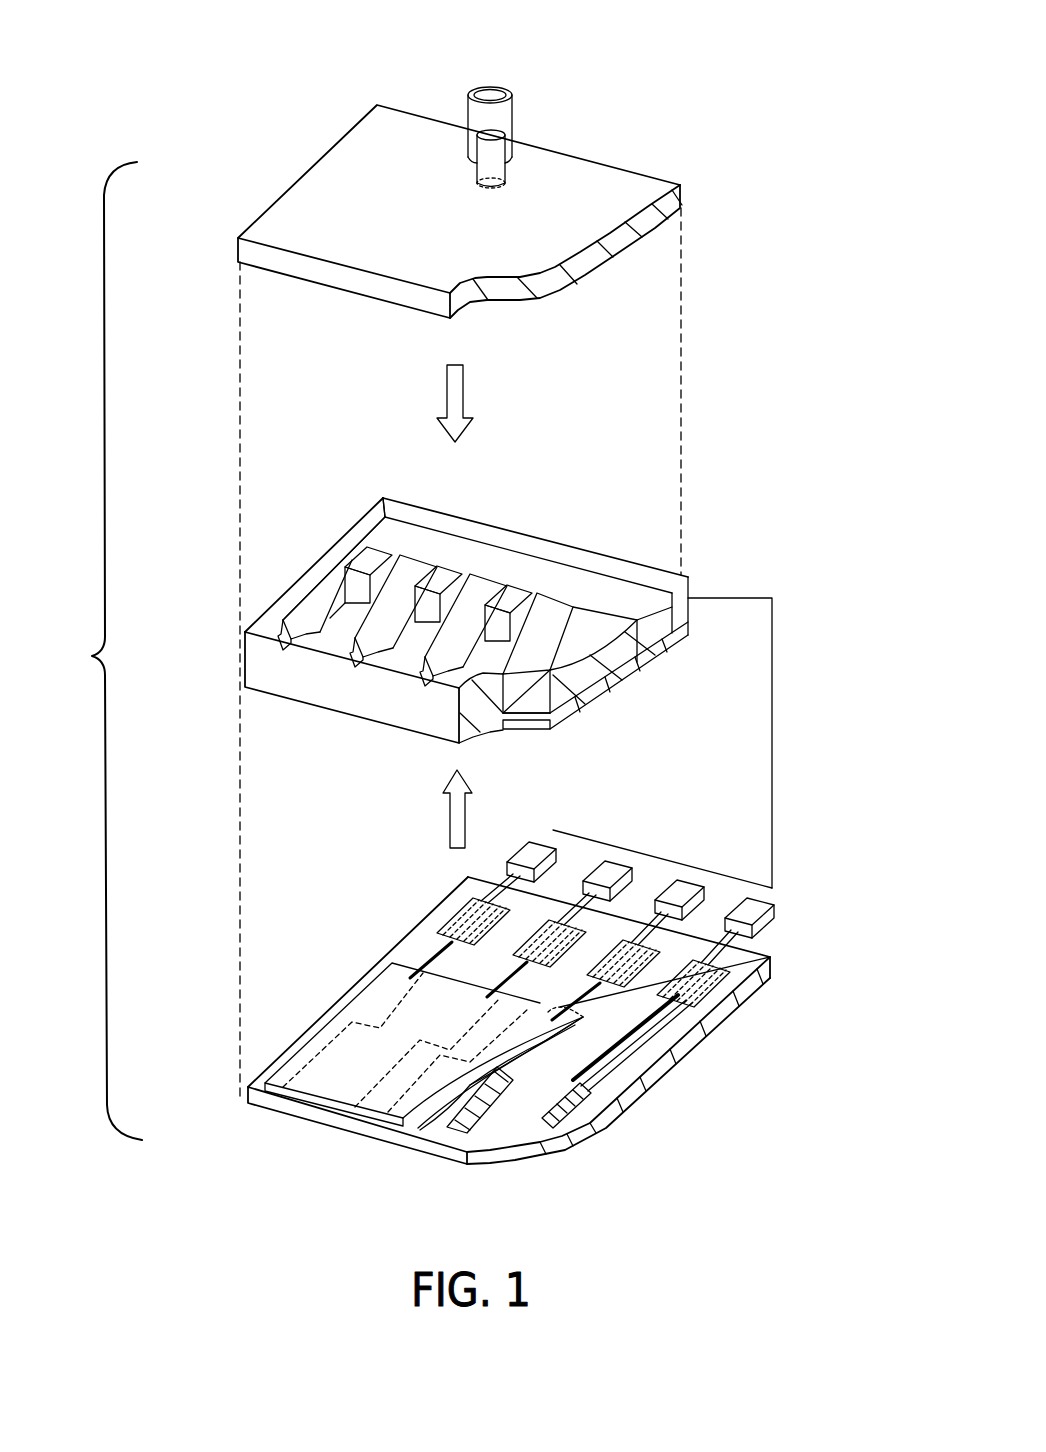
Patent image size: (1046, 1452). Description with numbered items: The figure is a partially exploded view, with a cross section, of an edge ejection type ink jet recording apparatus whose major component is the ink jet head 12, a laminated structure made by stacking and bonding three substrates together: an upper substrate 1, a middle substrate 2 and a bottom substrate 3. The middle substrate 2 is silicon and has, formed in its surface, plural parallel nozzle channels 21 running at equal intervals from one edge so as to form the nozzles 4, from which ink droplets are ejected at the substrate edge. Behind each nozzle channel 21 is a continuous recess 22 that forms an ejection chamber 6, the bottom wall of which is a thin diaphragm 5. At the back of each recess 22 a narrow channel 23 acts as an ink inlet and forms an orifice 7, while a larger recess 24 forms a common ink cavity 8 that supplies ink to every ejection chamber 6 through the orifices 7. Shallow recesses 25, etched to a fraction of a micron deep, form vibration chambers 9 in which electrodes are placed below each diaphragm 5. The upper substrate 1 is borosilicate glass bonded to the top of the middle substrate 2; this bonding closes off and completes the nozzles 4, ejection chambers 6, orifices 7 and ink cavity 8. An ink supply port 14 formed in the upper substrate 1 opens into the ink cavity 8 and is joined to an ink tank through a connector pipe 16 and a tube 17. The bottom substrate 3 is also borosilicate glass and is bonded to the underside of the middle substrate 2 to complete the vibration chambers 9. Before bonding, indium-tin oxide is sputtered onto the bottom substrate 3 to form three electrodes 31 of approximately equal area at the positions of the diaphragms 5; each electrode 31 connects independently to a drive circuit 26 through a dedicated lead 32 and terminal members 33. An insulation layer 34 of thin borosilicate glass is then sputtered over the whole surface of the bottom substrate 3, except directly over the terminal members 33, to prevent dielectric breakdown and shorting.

The upper substrate 1 is at (640, 210).
The middle substrate 2 is at (630, 570).
The bottom substrate 3 is at (667, 1067).
The nozzle 4 is at (290, 660).
The diaphragm 5 is at (520, 720).
The ejection chamber 6 is at (320, 602).
The orifice 7 is at (385, 517).
The common ink cavity 8 is at (457, 547).
The vibration chamber 9 is at (550, 730).
The ink jet head 12 is at (94, 651).
The ink supply port 14 is at (507, 162).
The connector pipe 16 is at (512, 138).
The tube 17 is at (512, 97).
The nozzle channel 21 is at (272, 617).
The recess 22 is at (293, 588).
The narrow channel 23 is at (340, 575).
The recess 24 is at (550, 550).
The recess 25 is at (550, 733).
The drive circuit 26 is at (790, 920).
The electrode 31 is at (507, 1103).
The lead 32 is at (640, 1032).
The terminal member 33 is at (770, 957).
The insulation layer 34 is at (375, 1000).